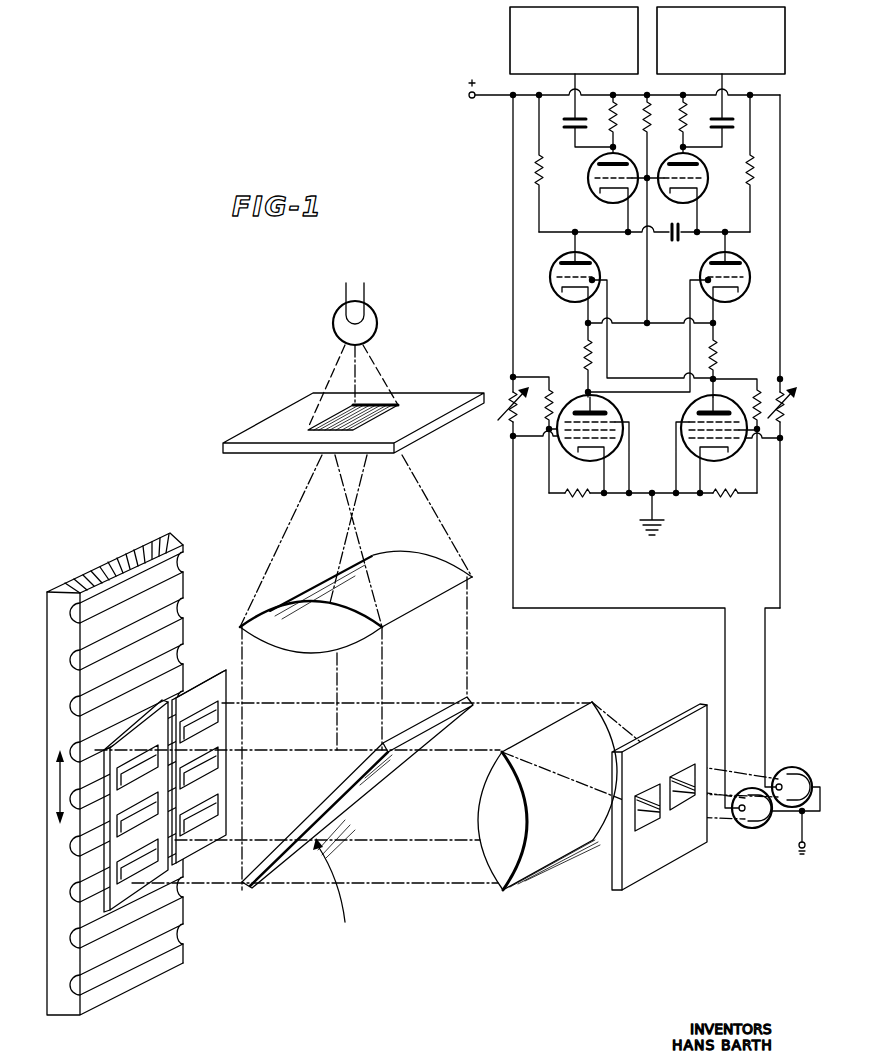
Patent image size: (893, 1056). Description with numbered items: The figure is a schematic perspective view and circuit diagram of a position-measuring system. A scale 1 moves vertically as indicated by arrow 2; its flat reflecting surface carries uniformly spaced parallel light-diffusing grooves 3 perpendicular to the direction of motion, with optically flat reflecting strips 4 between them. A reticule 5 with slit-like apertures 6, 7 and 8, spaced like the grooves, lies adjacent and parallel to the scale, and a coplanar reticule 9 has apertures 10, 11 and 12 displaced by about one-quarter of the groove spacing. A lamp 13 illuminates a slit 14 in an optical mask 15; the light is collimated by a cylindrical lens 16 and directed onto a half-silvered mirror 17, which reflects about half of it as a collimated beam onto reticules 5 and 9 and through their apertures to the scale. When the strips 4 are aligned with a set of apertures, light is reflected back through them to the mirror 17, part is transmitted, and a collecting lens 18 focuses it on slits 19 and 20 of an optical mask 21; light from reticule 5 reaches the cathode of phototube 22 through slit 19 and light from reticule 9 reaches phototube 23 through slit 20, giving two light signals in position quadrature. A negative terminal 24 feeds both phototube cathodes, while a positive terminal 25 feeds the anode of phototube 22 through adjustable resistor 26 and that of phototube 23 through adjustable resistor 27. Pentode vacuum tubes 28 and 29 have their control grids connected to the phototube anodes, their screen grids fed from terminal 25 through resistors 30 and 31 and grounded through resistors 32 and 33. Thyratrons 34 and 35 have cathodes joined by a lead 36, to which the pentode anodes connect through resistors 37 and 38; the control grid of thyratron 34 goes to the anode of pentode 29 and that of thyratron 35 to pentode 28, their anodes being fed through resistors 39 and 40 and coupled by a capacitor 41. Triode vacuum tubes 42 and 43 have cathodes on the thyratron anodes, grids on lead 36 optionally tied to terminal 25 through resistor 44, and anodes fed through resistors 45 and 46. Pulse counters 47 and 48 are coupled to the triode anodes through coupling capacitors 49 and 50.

The scale 1 is at (105, 565).
The arrow 2 is at (55, 792).
The light-diffusing grooves 3 is at (171, 613).
The reflecting strips 4 is at (177, 590).
The reticule 5 is at (128, 740).
The slit-like optical aperture 6 is at (138, 778).
The slit-like optical aperture 7 is at (138, 825).
The slit-like optical aperture 8 is at (138, 872).
The reticule 9 is at (219, 676).
The aperture 10 is at (221, 708).
The aperture 11 is at (191, 770).
The aperture 12 is at (199, 808).
The lamp 13 is at (333, 323).
The slit 14 is at (334, 418).
The optical mask 15 is at (250, 430).
The cylindrical lens 16 is at (400, 557).
The half-silvered mirror 17 is at (242, 888).
The collecting lens 18 is at (480, 806).
The slit 19 is at (645, 793).
The slit 20 is at (683, 775).
The optical mask 21 is at (660, 724).
The phototube 22 is at (745, 829).
The phototube 23 is at (799, 771).
The terminal 24 is at (799, 848).
The terminal 25 is at (470, 98).
The adjustable resistor 26 is at (500, 428).
The adjustable resistor 27 is at (788, 415).
The pentode vacuum tube 28 is at (611, 412).
The pentode vacuum tube 29 is at (694, 412).
The resistor 30 is at (552, 401).
The resistor 31 is at (762, 406).
The resistor 32 is at (579, 498).
The resistor 33 is at (723, 498).
The thyratron 34 is at (596, 275).
The thyratron 35 is at (747, 275).
The lead 36 is at (648, 327).
The resistor 37 is at (583, 352).
The resistor 38 is at (718, 352).
The resistor 39 is at (543, 163).
The resistor 40 is at (746, 163).
The capacitor 41 is at (672, 222).
The triode vacuum tube 42 is at (605, 195).
The triode vacuum tube 43 is at (690, 195).
The resistor 44 is at (643, 112).
The resistor 45 is at (609, 112).
The resistor 46 is at (679, 112).
The pulse counter 47 is at (510, 28).
The pulse counter 48 is at (786, 20).
The coupling capacitor 49 is at (570, 115).
The coupling capacitor 50 is at (719, 116).